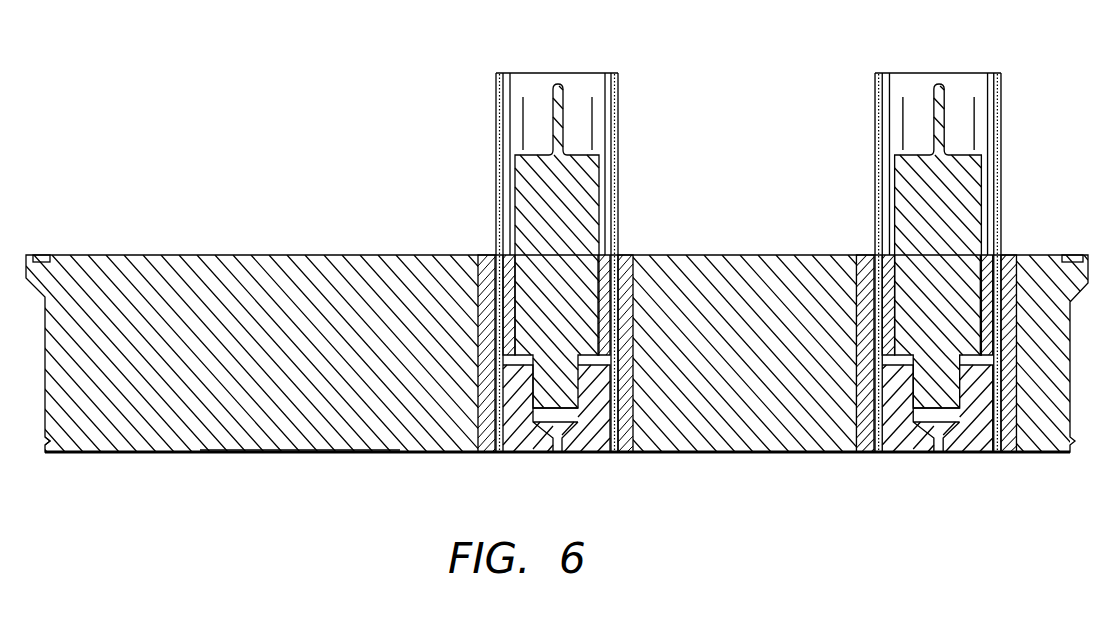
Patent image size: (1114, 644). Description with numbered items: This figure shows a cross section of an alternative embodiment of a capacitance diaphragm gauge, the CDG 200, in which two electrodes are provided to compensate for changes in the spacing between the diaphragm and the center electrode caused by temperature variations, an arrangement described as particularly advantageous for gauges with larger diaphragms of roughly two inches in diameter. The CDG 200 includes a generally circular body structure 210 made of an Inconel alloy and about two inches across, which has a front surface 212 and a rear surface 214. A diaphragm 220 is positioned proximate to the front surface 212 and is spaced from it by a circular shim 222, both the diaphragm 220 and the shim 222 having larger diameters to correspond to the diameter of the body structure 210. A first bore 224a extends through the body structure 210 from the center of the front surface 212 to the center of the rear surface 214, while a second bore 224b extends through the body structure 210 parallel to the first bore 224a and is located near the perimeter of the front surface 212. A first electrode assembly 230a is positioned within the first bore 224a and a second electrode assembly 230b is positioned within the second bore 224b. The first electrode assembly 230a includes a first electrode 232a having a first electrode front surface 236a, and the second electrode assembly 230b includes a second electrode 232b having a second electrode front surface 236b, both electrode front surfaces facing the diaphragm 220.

The CDG 200 is at (388, 68).
The body structure 210 is at (192, 270).
The front surface 212 is at (282, 456).
The rear surface 214 is at (72, 255).
The diaphragm 220 is at (168, 456).
The circular shim 222 is at (42, 455).
The first bore 224a is at (630, 255).
The second bore 224b is at (868, 255).
The first electrode assembly 230a is at (620, 90).
The second electrode assembly 230b is at (876, 90).
The first electrode 232a is at (582, 187).
The second electrode 232b is at (905, 187).
The first electrode front surface 236a is at (517, 456).
The second electrode front surface 236b is at (897, 456).